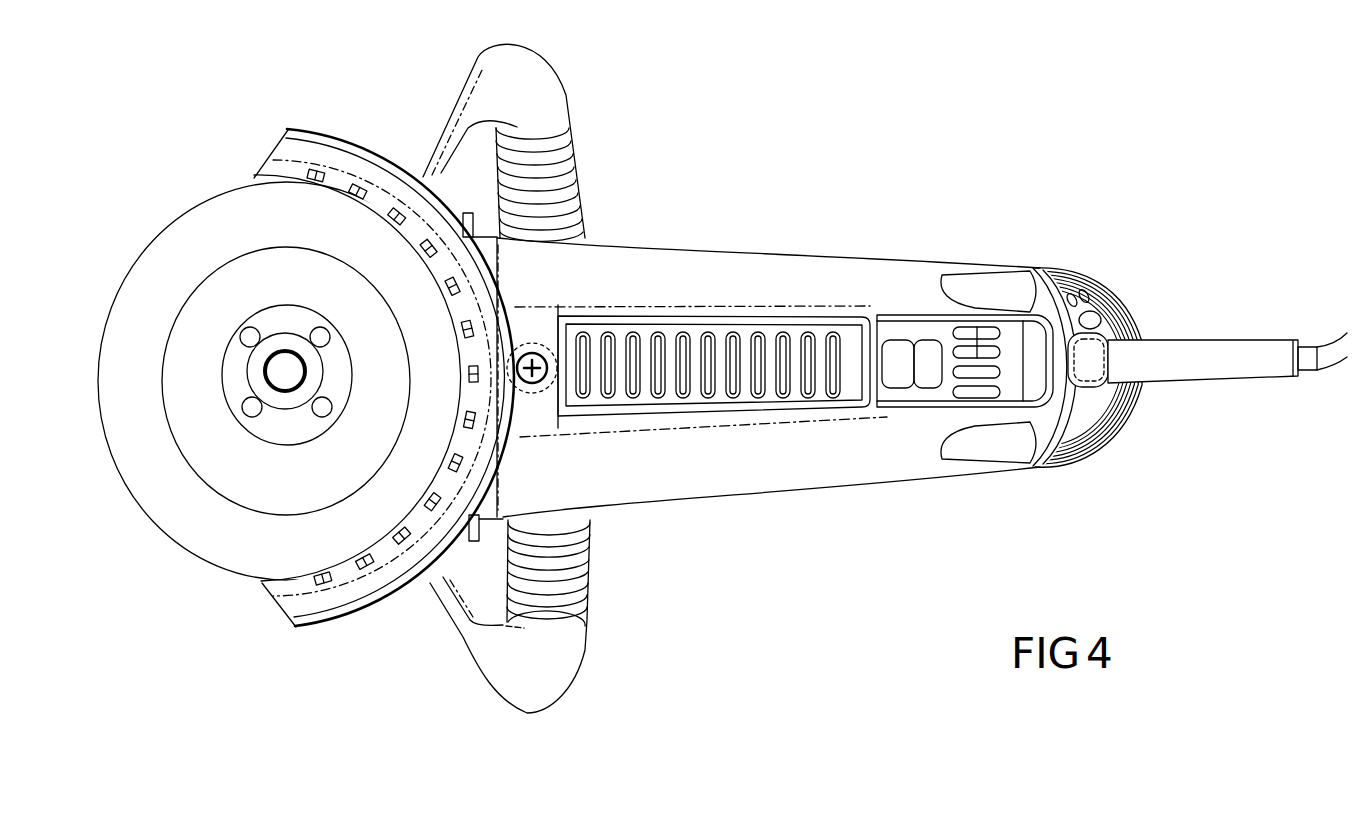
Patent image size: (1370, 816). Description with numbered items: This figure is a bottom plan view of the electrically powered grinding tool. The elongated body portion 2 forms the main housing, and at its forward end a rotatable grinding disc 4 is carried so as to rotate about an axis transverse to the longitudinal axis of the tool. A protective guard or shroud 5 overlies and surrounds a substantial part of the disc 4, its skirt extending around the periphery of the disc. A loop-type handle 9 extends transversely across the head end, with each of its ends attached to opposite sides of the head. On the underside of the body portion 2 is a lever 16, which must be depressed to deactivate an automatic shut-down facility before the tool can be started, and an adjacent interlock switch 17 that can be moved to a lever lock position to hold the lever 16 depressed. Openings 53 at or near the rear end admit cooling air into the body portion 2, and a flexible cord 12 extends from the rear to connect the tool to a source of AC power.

The body portion 2 is at (832, 494).
The grinding disc 4 is at (237, 535).
The protective guard or shroud 5 is at (350, 626).
The loop-type handle 9 is at (588, 160).
The flexible cord 12 is at (1331, 345).
The lever 16 is at (720, 352).
The interlock switch 17 is at (893, 360).
The openings 53 is at (1110, 290).